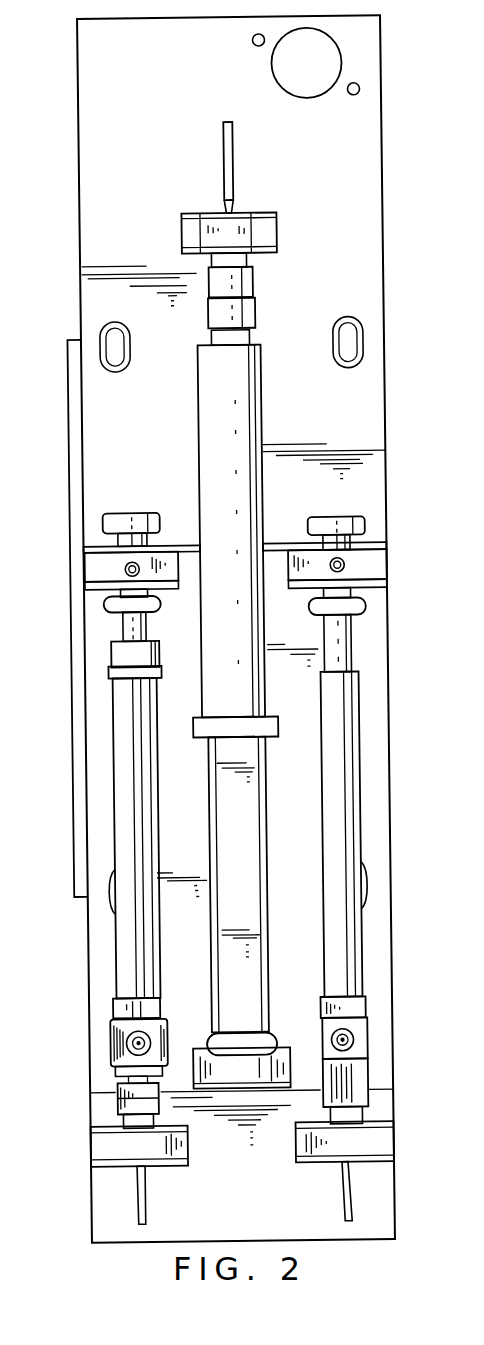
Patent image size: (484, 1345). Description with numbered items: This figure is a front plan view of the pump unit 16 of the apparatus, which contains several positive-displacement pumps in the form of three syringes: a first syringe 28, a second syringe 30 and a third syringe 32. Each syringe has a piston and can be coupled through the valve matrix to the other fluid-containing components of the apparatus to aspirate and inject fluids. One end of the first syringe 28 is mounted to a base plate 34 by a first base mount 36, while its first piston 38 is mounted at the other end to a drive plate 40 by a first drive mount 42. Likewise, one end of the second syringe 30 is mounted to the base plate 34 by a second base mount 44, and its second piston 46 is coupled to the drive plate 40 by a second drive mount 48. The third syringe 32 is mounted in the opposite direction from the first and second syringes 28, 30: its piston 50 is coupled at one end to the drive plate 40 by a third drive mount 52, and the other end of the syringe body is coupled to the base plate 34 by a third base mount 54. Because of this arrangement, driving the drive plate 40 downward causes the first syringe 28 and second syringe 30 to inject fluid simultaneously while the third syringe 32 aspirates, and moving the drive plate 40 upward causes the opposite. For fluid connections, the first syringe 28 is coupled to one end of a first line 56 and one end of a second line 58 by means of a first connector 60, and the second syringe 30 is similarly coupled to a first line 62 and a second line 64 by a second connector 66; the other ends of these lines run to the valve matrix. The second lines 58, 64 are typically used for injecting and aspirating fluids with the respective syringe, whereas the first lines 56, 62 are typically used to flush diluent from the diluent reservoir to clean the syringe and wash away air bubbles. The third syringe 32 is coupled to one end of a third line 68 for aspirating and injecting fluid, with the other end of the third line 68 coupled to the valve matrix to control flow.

The pump unit 16 is at (429, 113).
The first syringe 28 is at (111, 719).
The second syringe 30 is at (358, 804).
The third syringe 32 is at (249, 427).
The base plate 34 is at (100, 151).
The first base mount 36 is at (99, 1146).
The first piston 38 is at (120, 627).
The drive plate 40 is at (190, 544).
The first drive mount 42 is at (94, 565).
The second base mount 44 is at (371, 1145).
The second piston 46 is at (347, 636).
The second drive mount 48 is at (374, 566).
The piston 50 is at (206, 815).
The third drive mount 52 is at (186, 1060).
The third base mount 54 is at (188, 229).
The first line 56 is at (130, 1049).
The second line 58 is at (142, 1202).
The first connector 60 is at (106, 1040).
The first line 62 is at (348, 1039).
The second line 64 is at (336, 1193).
The second connector 66 is at (361, 1014).
The third line 68 is at (232, 140).